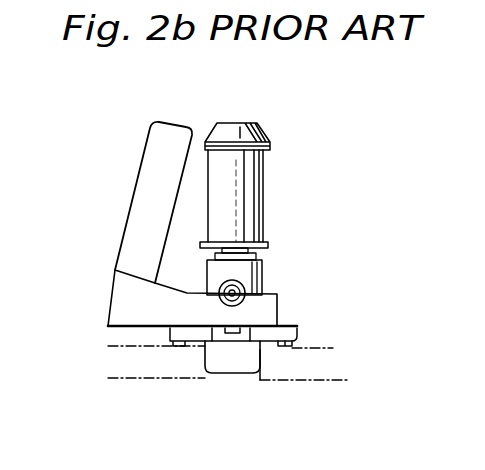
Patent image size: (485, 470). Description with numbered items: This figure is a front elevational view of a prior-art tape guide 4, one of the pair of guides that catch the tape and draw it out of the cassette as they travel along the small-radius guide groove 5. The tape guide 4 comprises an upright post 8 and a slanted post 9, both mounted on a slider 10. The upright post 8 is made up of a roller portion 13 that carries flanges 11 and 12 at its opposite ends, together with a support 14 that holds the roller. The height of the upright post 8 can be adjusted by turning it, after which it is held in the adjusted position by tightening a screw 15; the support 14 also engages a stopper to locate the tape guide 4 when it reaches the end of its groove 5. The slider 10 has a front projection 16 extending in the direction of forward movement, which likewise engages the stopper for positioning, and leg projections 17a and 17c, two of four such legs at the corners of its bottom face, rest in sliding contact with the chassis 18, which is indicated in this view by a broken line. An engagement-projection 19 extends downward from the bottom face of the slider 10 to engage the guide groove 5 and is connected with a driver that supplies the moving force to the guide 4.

The tape guide 4 is at (291, 131).
The guide groove 5 is at (218, 380).
The upright post 8 is at (286, 190).
The slanted post 9 is at (165, 132).
The slider 10 is at (297, 332).
The flange 11 is at (233, 122).
The flange 12 is at (268, 245).
The roller portion 13 is at (257, 165).
The support 14 is at (262, 271).
The screw 15 is at (222, 285).
The front projection 16 is at (218, 335).
The leg projection 17a is at (178, 346).
The leg projection 17c is at (288, 348).
The chassis 18 is at (108, 347).
The engagement-projection 19 is at (243, 361).